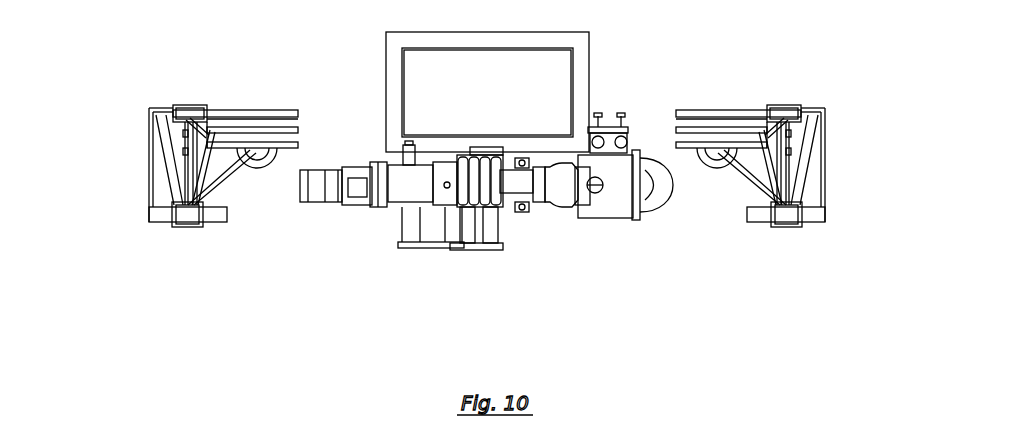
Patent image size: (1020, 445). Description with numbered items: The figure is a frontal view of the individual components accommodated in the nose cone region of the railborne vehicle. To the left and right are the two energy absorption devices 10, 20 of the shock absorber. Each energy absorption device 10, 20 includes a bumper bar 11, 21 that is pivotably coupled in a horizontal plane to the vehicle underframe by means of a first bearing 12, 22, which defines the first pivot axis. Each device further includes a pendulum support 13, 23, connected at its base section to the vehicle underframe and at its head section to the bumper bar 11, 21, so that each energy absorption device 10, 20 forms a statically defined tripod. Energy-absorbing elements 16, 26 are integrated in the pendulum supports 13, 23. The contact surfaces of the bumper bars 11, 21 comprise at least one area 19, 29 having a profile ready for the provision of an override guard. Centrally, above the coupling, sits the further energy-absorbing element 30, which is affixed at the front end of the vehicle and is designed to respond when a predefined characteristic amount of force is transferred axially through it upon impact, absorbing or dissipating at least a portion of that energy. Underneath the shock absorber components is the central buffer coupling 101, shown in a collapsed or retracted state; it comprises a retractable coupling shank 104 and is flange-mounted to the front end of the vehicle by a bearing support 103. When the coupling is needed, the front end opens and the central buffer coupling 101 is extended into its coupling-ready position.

The energy absorption device 10 is at (173, 175).
The bumper bar 11 is at (257, 122).
The first bearing 12 is at (177, 103).
The pendulum support 13 is at (233, 158).
The energy-absorbing element 16 is at (200, 161).
The area having a profile 19 is at (288, 115).
The energy absorption device 20 is at (806, 175).
The bumper bar 21 is at (687, 120).
The first bearing 22 is at (793, 105).
The pendulum support 23 is at (747, 157).
The energy-absorbing element 26 is at (773, 161).
The area having a profile 29 is at (727, 115).
The further energy-absorbing element 30 is at (487, 92).
The central buffer coupling 101 is at (605, 190).
The bearing support 103 is at (507, 207).
The retractable coupling shank 104 is at (415, 183).